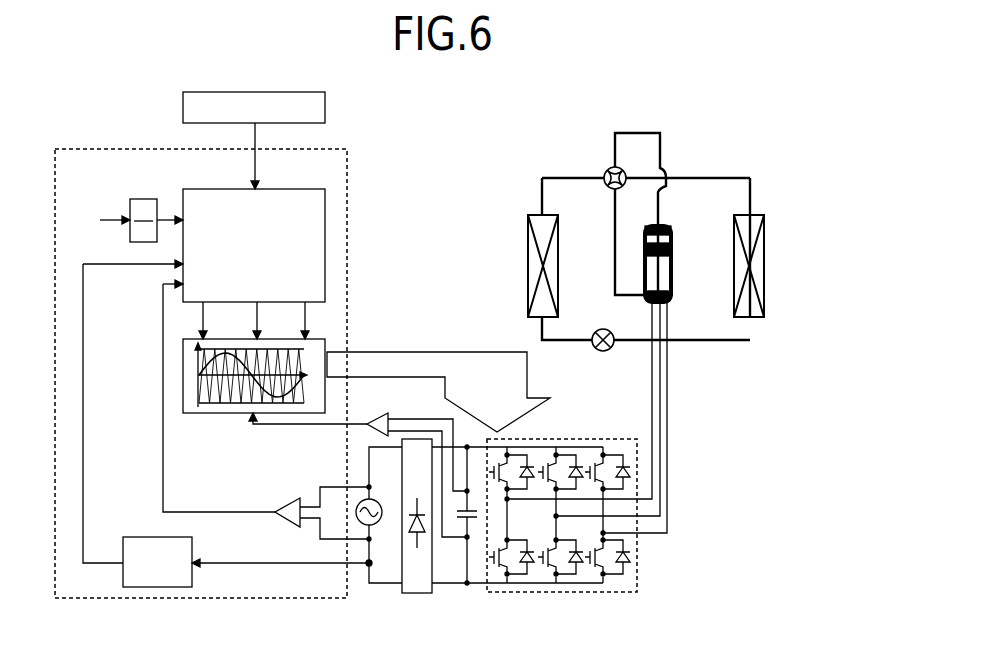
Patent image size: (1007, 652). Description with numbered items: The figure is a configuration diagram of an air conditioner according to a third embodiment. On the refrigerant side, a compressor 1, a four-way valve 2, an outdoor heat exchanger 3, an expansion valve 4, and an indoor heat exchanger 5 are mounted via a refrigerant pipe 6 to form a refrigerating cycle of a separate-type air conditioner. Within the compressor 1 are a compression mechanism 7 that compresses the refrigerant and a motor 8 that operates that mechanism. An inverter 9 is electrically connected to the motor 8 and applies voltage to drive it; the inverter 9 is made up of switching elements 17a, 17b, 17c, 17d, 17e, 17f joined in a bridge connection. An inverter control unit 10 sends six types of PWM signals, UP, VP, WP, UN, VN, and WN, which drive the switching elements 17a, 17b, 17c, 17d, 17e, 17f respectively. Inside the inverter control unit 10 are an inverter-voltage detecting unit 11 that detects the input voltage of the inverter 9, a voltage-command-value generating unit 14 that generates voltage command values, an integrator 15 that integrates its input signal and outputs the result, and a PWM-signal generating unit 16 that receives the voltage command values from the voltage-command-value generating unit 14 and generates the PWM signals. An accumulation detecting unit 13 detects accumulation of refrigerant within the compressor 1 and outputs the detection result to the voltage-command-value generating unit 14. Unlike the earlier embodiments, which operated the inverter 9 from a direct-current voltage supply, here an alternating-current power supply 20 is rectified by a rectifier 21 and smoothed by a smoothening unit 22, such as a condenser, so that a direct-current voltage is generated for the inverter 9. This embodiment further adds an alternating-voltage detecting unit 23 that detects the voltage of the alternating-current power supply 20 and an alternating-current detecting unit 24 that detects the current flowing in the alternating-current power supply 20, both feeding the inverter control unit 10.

The compressor 1 is at (672, 210).
The four-way valve 2 is at (587, 163).
The outdoor heat exchanger 3 is at (521, 240).
The expansion valve 4 is at (589, 365).
The indoor heat exchanger 5 is at (779, 242).
The refrigerant pipe 6 is at (668, 237).
The compression mechanism 7 is at (628, 264).
The motor 8 is at (678, 306).
The inverter 9 is at (585, 466).
The inverter control unit 10 is at (220, 335).
The inverter-voltage detecting unit 11 is at (356, 456).
The accumulation detecting unit 13 is at (216, 140).
The voltage-command-value generating unit 14 is at (208, 250).
The integrator 15 is at (123, 210).
The PWM-signal generating unit 16 is at (329, 385).
The switching element 17a is at (532, 448).
The switching element 17b is at (580, 448).
The switching element 17c is at (627, 448).
The switching element 17d is at (502, 584).
The switching element 17e is at (550, 584).
The switching element 17f is at (598, 584).
The alternating-current power supply 20 is at (380, 515).
The rectifier 21 is at (405, 537).
The smoothening unit 22 is at (517, 515).
The alternating-voltage detecting unit 23 is at (267, 412).
The alternating-current detecting unit 24 is at (227, 425).